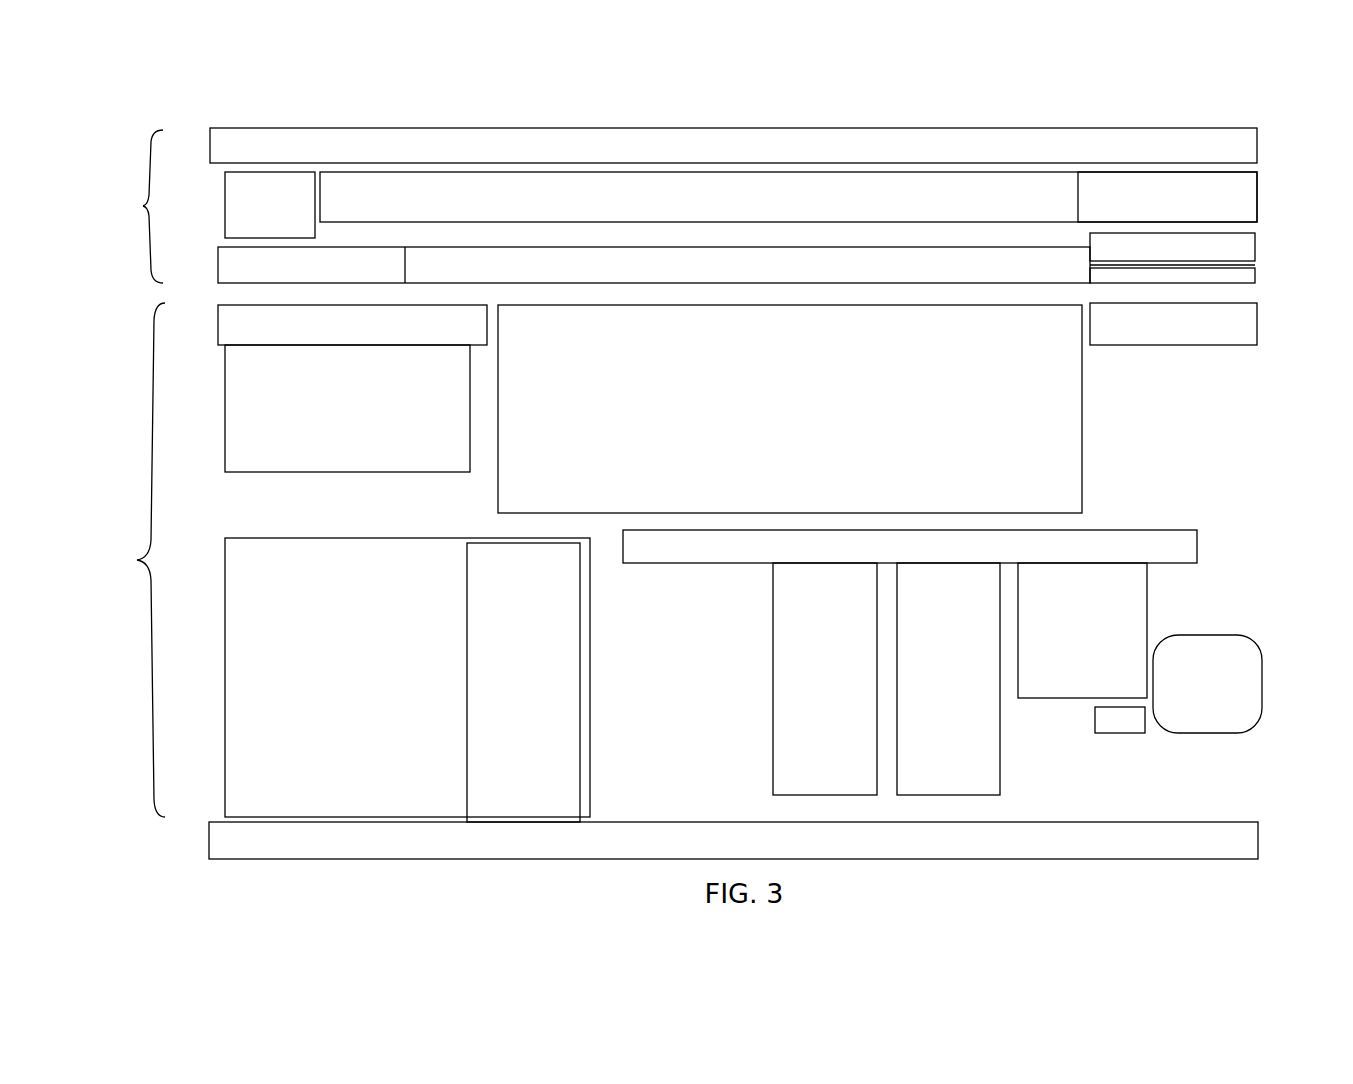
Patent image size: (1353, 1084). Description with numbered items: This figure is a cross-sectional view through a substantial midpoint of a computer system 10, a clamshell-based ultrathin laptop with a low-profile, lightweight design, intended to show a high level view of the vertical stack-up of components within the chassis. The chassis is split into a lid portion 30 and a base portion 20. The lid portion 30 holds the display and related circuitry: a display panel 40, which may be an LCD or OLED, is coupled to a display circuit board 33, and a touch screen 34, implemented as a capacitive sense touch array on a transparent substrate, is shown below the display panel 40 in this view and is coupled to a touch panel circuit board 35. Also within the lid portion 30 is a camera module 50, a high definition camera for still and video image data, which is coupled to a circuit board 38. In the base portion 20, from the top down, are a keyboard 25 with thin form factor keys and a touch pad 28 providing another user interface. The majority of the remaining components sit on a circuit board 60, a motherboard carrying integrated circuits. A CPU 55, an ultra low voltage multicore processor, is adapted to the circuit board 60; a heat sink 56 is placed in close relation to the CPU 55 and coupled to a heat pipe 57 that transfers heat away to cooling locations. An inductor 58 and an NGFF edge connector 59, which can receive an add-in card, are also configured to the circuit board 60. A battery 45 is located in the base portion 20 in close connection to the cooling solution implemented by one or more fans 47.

The system 10 is at (257, 110).
The base portion 20 is at (136, 560).
The keyboard 25 is at (778, 437).
The touch pad 28 is at (336, 437).
The lid portion 30 is at (135, 206).
The display circuit board 33 is at (1258, 197).
The touch screen 34 is at (505, 197).
The touch panel circuit board 35 is at (1257, 250).
The circuit board 38 is at (218, 263).
The display panel 40 is at (697, 170).
The battery 45 is at (336, 705).
The fan 47 is at (580, 679).
The camera module 50 is at (225, 207).
The CPU 55 is at (1065, 698).
The heat sink 56 is at (1120, 735).
The heat pipe 57 is at (1233, 635).
The inductor 58 is at (938, 706).
The NGFF edge connector 59 is at (773, 680).
The circuit board 60 is at (1130, 541).